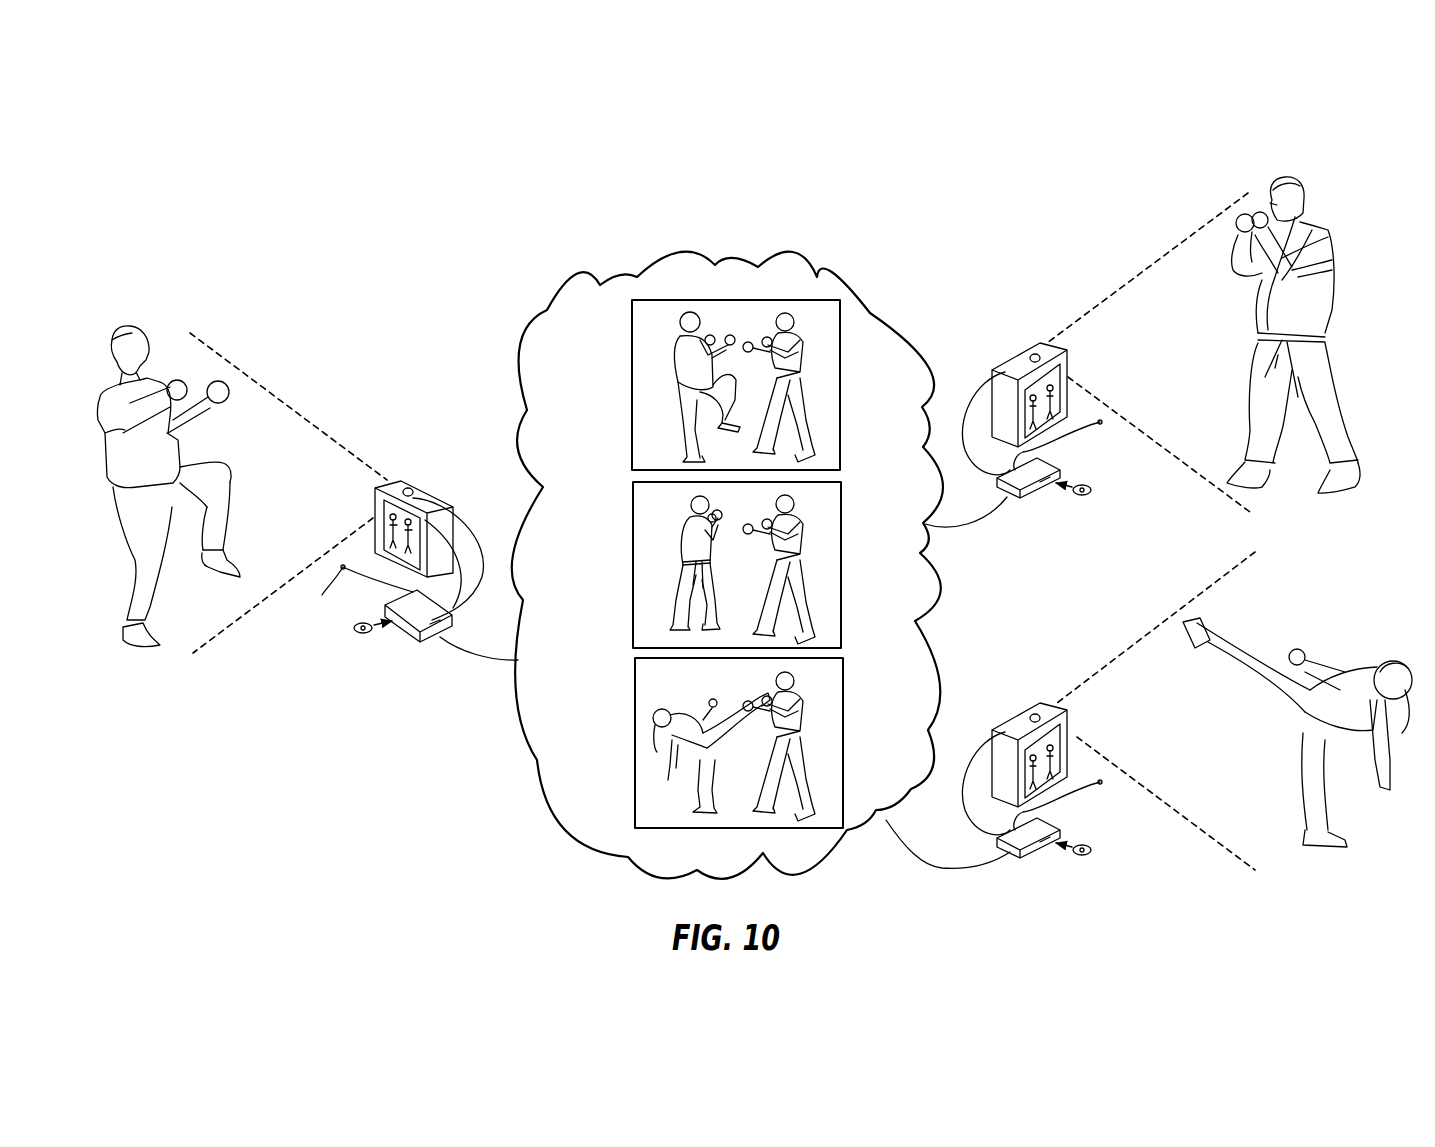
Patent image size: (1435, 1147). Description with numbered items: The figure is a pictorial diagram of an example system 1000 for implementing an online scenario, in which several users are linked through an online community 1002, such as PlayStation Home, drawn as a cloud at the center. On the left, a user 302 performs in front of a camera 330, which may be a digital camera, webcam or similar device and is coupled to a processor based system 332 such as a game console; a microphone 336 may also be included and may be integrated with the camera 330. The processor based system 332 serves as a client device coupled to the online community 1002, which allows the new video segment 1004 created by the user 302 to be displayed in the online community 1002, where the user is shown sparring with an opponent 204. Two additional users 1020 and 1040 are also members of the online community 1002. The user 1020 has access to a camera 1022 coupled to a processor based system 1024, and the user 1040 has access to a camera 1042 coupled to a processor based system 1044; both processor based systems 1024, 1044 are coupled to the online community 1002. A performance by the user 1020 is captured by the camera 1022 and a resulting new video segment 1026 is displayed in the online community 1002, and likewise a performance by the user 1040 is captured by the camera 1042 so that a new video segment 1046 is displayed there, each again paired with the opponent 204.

The system 1000 is at (338, 188).
The online community 1002 is at (788, 255).
The new video segment 1004 is at (630, 388).
The new video segment 1026 is at (630, 567).
The new video segment 1046 is at (632, 745).
The user 302 is at (222, 440).
The computer-controlled opponent character 204 is at (812, 355).
The user 1020 is at (1325, 198).
The user 1040 is at (1330, 630).
The camera 330 is at (408, 490).
The processor based system 332 is at (413, 634).
The microphone 336 is at (345, 621).
The camera 1022 is at (1035, 355).
The processor based system 1024 is at (1033, 497).
The camera 1042 is at (1035, 715).
The processor based system 1044 is at (1036, 858).